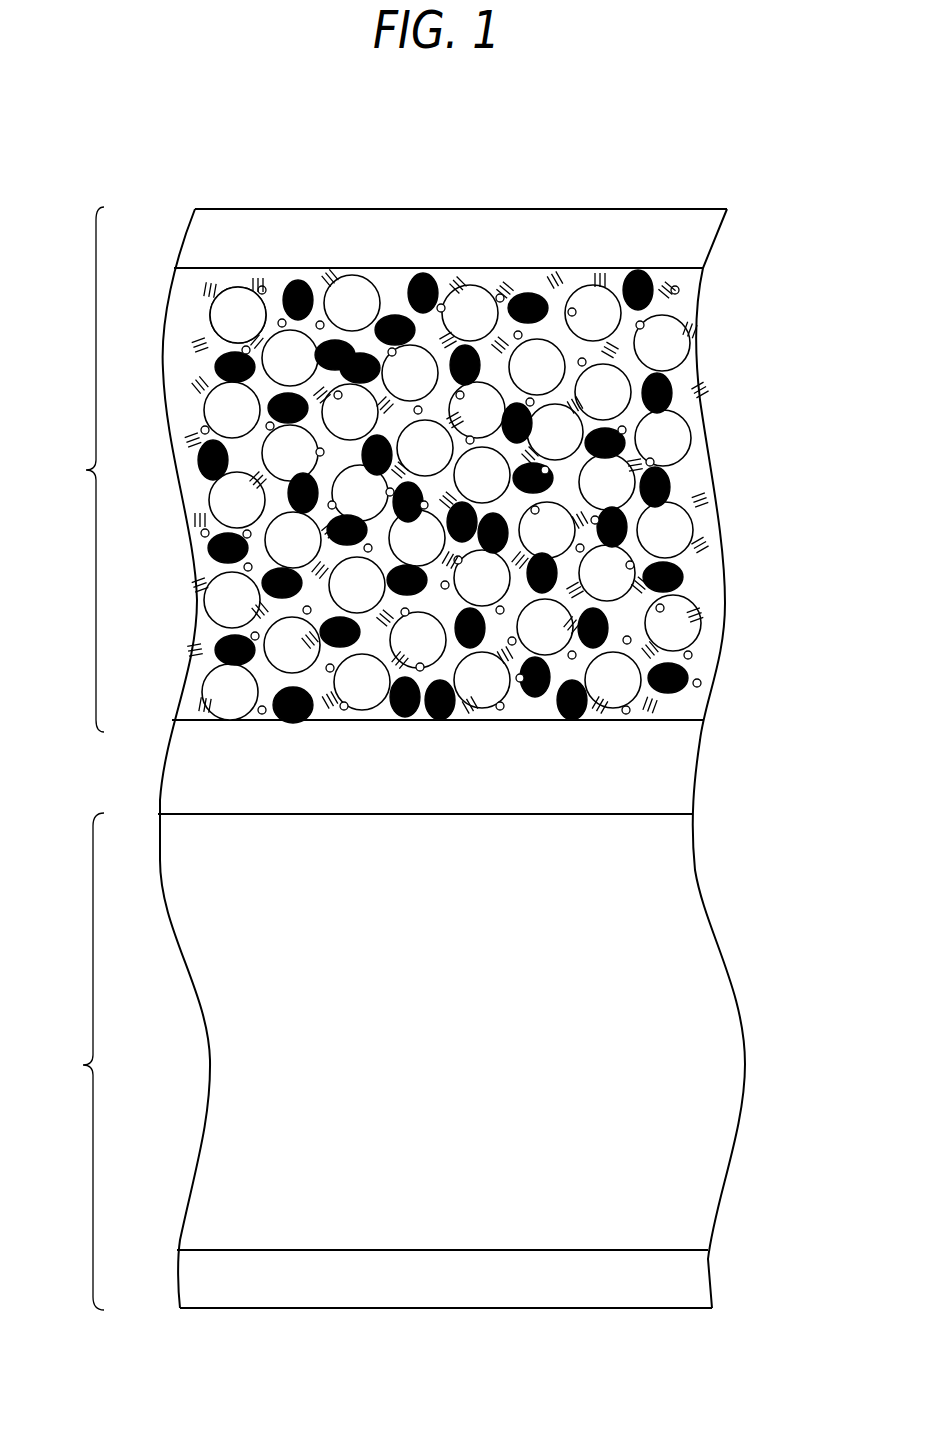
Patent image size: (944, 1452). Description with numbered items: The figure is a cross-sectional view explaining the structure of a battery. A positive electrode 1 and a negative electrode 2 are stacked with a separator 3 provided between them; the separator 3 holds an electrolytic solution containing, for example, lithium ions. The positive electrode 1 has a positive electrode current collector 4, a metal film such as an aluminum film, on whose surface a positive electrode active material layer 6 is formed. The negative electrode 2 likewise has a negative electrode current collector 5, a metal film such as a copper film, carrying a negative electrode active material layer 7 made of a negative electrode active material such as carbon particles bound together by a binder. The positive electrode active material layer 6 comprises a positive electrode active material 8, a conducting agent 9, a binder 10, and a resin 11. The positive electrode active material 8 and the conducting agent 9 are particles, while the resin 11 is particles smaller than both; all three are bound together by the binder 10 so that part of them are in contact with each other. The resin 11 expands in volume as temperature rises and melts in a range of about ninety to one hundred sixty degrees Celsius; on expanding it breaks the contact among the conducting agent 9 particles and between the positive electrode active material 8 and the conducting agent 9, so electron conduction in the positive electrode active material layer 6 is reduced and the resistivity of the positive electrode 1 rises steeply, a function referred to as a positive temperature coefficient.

The positive electrode 1 is at (70, 484).
The negative electrode 2 is at (68, 1081).
The separator 3 is at (678, 768).
The positive electrode current collector 4 is at (620, 226).
The negative electrode current collector 5 is at (692, 1293).
The positive electrode active material layer 6 is at (712, 547).
The negative electrode active material layer 7 is at (687, 938).
The positive electrode active material 8 is at (232, 300).
The conducting agent 9 is at (302, 288).
The binder 10 is at (463, 272).
The resin 11 is at (701, 683).